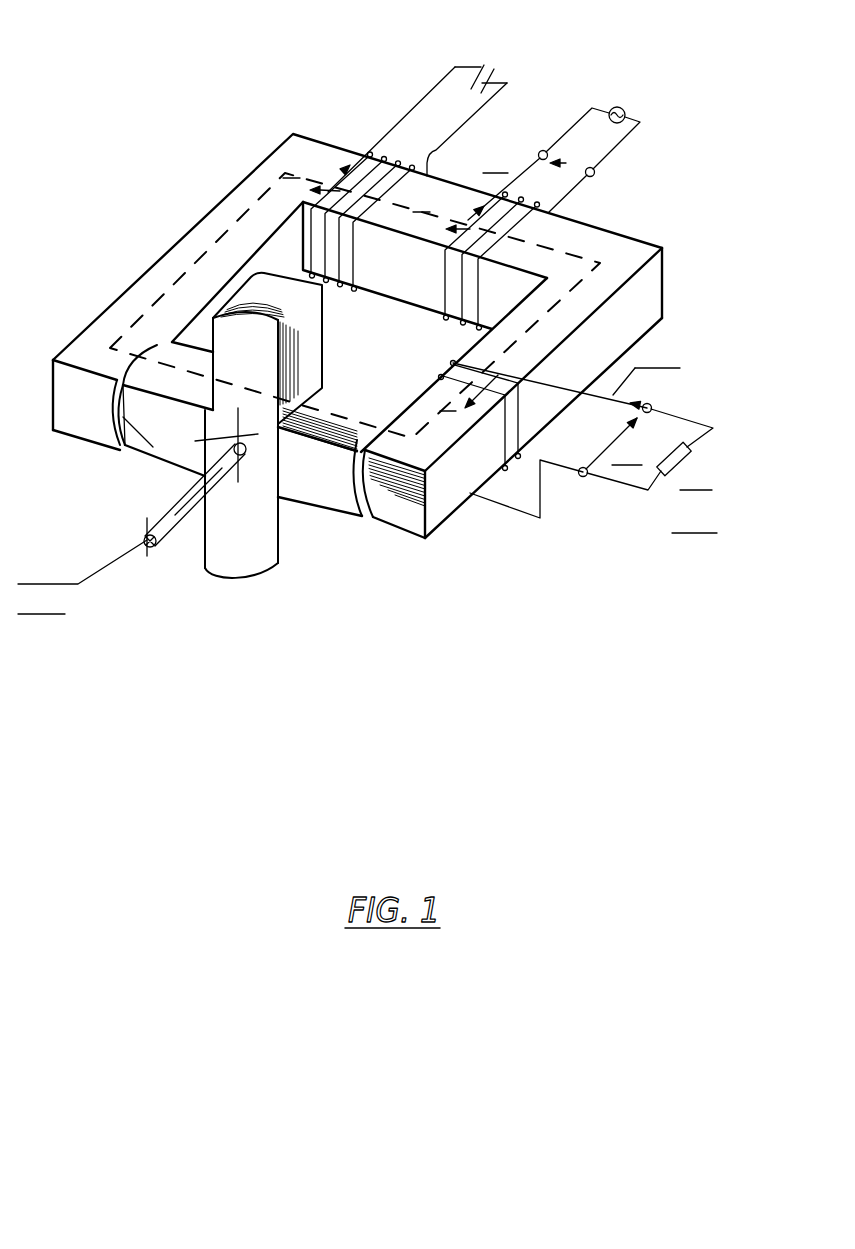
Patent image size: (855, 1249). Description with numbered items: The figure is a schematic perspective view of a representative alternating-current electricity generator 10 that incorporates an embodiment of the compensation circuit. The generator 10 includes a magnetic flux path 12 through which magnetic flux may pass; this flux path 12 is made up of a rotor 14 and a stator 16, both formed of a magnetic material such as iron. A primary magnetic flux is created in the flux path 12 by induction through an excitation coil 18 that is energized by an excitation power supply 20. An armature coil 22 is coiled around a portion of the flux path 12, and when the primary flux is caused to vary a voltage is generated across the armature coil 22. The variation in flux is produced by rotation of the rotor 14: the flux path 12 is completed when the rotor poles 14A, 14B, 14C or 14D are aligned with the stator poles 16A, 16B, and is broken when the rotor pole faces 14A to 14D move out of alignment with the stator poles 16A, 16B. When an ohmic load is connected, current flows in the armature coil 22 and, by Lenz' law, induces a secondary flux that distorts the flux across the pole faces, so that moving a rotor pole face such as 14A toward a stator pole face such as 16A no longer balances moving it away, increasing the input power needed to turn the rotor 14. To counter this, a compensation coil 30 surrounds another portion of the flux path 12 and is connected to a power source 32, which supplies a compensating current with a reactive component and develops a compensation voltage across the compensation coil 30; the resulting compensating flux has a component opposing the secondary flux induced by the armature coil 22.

The generator 10 is at (366, 326).
The magnetic flux path 12 is at (257, 205).
The rotor 14 is at (227, 458).
The rotor pole 14A is at (358, 476).
The rotor pole 14B is at (153, 445).
The rotor pole 14C is at (247, 578).
The rotor pole 14D is at (267, 348).
The stator 16 is at (307, 380).
The stator pole 16A is at (357, 482).
The stator pole 16B is at (112, 423).
The excitation coil 18 is at (373, 138).
The excitation power supply 20 is at (500, 56).
The armature coil 22 is at (453, 363).
The compensation coil 30 is at (566, 193).
The power source 32 is at (624, 108).